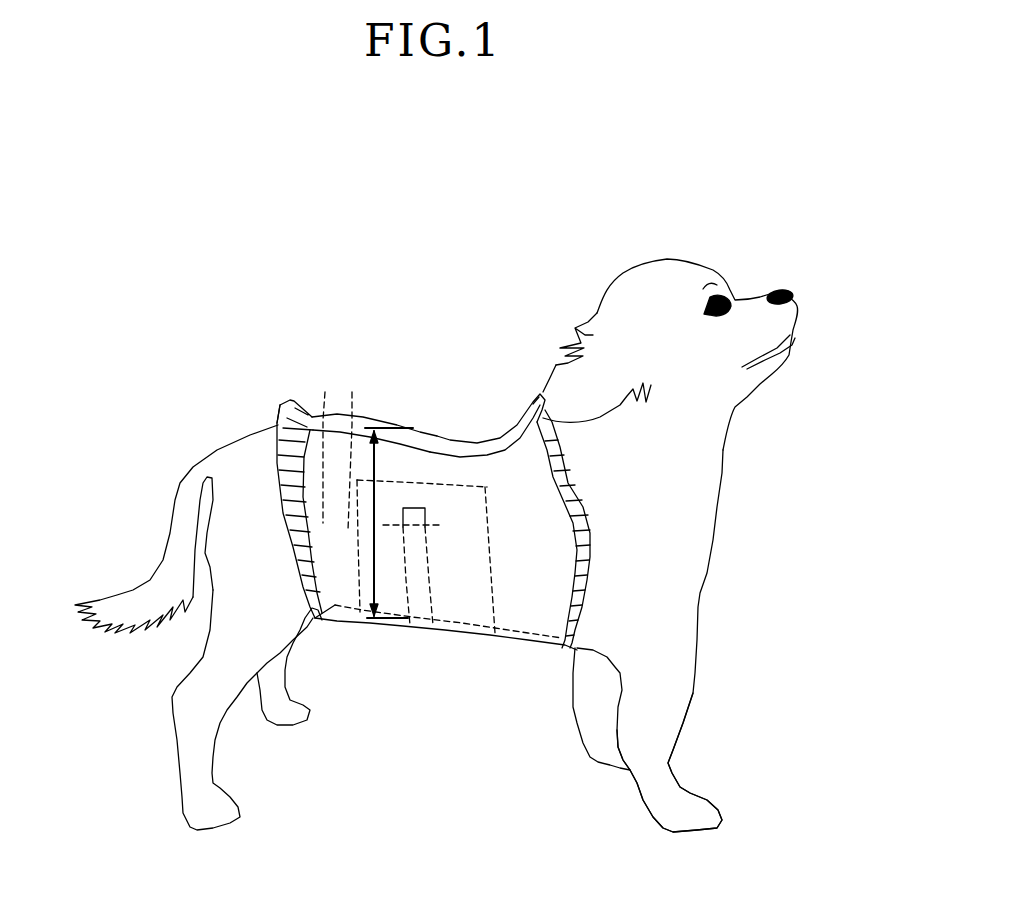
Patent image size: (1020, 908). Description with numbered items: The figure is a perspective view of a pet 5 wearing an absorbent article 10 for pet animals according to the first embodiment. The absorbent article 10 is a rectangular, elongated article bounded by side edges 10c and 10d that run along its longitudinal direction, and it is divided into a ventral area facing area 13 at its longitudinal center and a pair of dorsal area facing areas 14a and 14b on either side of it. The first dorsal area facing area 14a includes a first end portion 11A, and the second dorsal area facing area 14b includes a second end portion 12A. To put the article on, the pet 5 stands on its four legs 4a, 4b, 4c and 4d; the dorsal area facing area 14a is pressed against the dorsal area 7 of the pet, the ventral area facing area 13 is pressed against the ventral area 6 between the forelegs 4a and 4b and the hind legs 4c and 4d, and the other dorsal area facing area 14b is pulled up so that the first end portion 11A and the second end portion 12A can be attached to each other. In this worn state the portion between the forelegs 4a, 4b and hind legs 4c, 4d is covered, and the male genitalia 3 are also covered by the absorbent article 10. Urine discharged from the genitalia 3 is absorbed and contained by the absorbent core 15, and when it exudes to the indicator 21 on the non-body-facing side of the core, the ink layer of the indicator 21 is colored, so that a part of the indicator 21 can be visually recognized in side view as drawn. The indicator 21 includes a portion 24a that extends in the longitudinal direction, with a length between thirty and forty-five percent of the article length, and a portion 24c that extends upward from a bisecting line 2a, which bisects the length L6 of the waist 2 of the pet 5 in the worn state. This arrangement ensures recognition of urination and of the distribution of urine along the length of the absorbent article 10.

The pet 5 is at (436, 525).
The absorbent article 10 is at (454, 493).
The side edge 10c is at (282, 505).
The side edge 10d is at (583, 511).
The dorsal area facing area 14a is at (379, 418).
The first end portion 11A is at (391, 392).
The dorsal area facing area 14b is at (443, 448).
The second end portion 12A is at (481, 413).
The waist 2 is at (304, 444).
The dorsal area 7 is at (353, 447).
The portion of indicator 24c is at (445, 482).
The portion of indicator 24a is at (430, 580).
The indicator 21 is at (427, 548).
The bisecting line 2a is at (437, 523).
The absorbent core 15 is at (487, 528).
The length of waist L6 is at (370, 555).
The genitalia 3 is at (335, 620).
The ventral area facing area 13 is at (445, 632).
The ventral area 6 is at (477, 632).
The foreleg 4a is at (603, 750).
The foreleg 4b is at (687, 817).
The hind leg 4c is at (283, 715).
The hind leg 4d is at (207, 813).